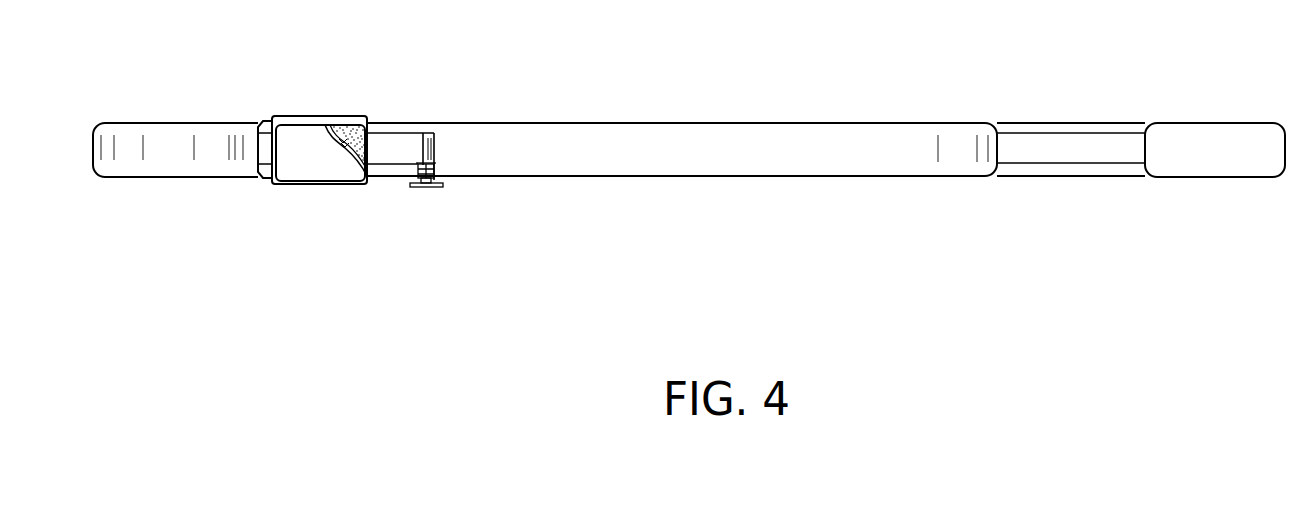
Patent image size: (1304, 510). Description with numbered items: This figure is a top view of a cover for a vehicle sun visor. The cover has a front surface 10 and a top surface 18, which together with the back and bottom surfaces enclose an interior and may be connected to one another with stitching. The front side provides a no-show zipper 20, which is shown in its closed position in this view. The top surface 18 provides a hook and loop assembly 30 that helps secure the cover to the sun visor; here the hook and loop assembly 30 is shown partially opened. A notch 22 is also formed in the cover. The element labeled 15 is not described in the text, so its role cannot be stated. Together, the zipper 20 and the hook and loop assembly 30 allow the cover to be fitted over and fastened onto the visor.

The front surface 10 is at (913, 170).
The end cap 15 is at (178, 172).
The top surface 18 is at (662, 136).
The zipper 20 is at (422, 190).
The notch 22 is at (1043, 155).
The hook and loop assembly 30 is at (352, 121).